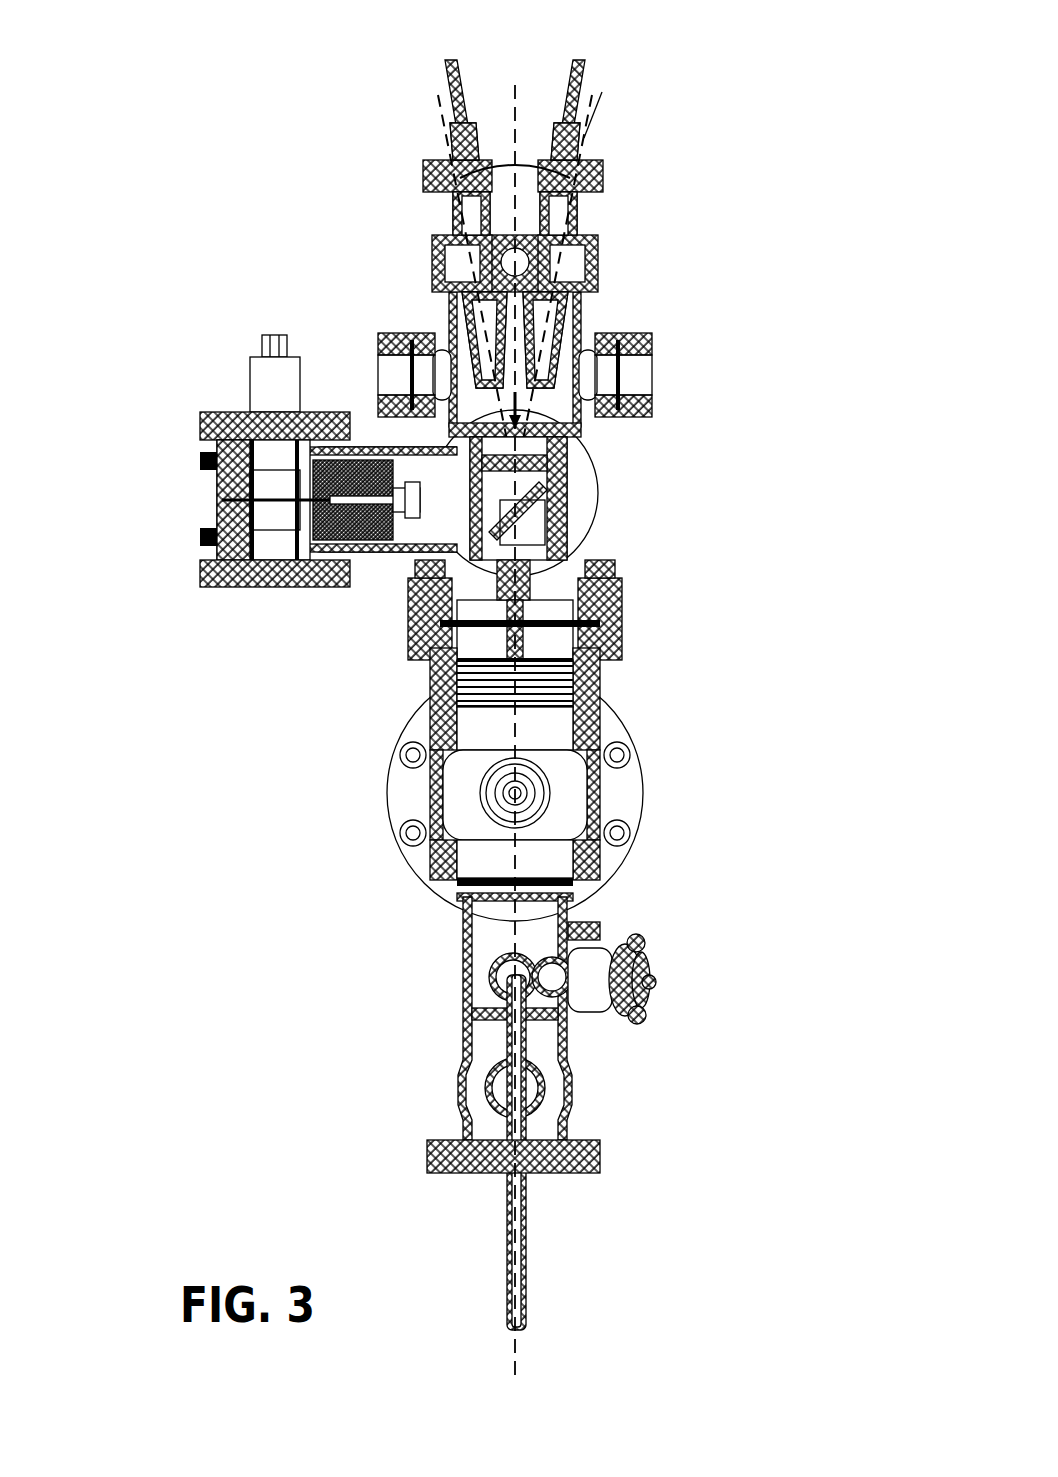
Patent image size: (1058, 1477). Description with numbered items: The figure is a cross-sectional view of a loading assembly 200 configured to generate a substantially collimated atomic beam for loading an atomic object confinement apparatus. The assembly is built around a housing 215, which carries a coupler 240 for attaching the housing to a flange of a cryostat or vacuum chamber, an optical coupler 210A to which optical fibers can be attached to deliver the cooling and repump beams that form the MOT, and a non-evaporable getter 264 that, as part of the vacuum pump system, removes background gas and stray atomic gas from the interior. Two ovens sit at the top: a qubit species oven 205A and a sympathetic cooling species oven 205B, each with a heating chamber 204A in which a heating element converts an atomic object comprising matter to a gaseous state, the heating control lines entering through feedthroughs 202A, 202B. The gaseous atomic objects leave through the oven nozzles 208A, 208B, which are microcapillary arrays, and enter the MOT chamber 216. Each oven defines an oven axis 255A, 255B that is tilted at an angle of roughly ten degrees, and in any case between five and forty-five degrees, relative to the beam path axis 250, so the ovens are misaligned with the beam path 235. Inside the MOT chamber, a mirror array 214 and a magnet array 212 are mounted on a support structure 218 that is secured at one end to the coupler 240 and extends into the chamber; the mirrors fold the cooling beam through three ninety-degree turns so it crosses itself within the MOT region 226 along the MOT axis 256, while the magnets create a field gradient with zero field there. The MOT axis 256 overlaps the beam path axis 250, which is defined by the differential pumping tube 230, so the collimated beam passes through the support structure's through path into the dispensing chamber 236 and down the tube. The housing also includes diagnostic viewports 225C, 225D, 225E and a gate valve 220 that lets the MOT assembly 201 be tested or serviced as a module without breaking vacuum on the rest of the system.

The loading assembly 200 is at (547, 377).
The MOT assembly 201 is at (232, 683).
The feedthrough 202A is at (633, 203).
The feedthrough 202B is at (397, 203).
The heating chamber 204A is at (518, 308).
The qubit species oven 205A is at (515, 208).
The sympathetic cooling species oven 205B is at (403, 215).
The oven nozzle 208A is at (647, 318).
The oven nozzle 208B is at (388, 322).
The optical coupler 210A is at (603, 493).
The magnet array 212 is at (644, 581).
The mirror array 214 is at (440, 601).
The housing 215 is at (584, 448).
The MOT chamber 216 is at (637, 558).
The support structure 218 is at (413, 642).
The gate valve 220 is at (507, 728).
The diagnostic viewport 225C is at (655, 1011).
The diagnostic viewport 225D is at (684, 357).
The diagnostic viewport 225E is at (341, 357).
The MOT region 226 is at (619, 612).
The differential pumping tube 230 is at (570, 1152).
The beam path 235 is at (501, 953).
The dispensing chamber 236 is at (604, 955).
The coupler 240 is at (603, 683).
The beam path axis 250 is at (569, 730).
The qubit species oven axis 255A is at (641, 114).
The sympathetic cooling species oven axis 255B is at (397, 133).
The MOT axis 256 is at (570, 490).
The non-evaporable getter 264 is at (220, 497).